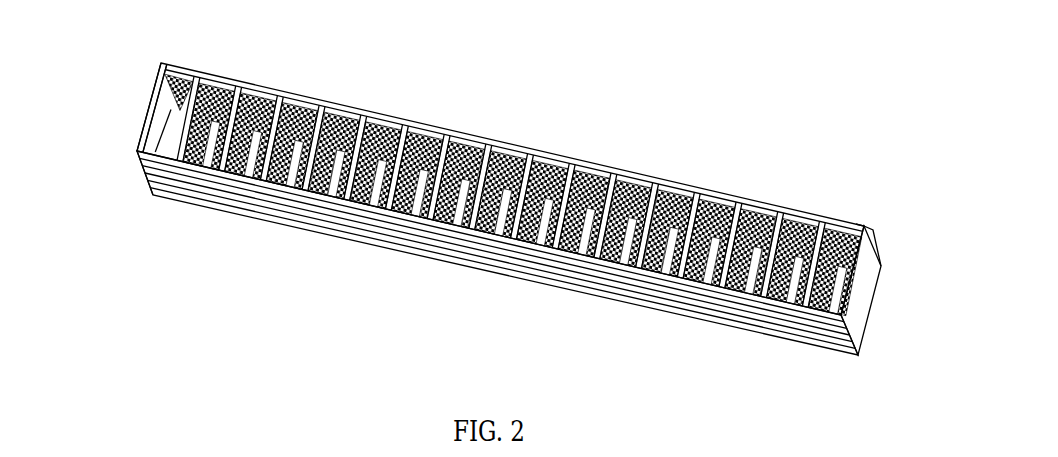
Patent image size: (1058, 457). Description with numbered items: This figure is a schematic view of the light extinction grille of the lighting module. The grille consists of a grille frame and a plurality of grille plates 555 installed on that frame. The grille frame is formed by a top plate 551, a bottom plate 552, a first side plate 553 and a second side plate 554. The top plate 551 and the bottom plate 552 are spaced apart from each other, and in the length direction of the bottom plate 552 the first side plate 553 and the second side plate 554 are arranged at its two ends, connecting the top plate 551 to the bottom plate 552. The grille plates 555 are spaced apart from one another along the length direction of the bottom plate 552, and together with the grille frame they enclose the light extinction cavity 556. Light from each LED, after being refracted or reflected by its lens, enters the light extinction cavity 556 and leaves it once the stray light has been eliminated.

The top plate 551 is at (548, 147).
The bottom plate 552 is at (417, 237).
The first side plate 553 is at (853, 290).
The second side plate 554 is at (140, 107).
The grille plates 555 is at (683, 180).
The light extinction cavity 556 is at (835, 220).